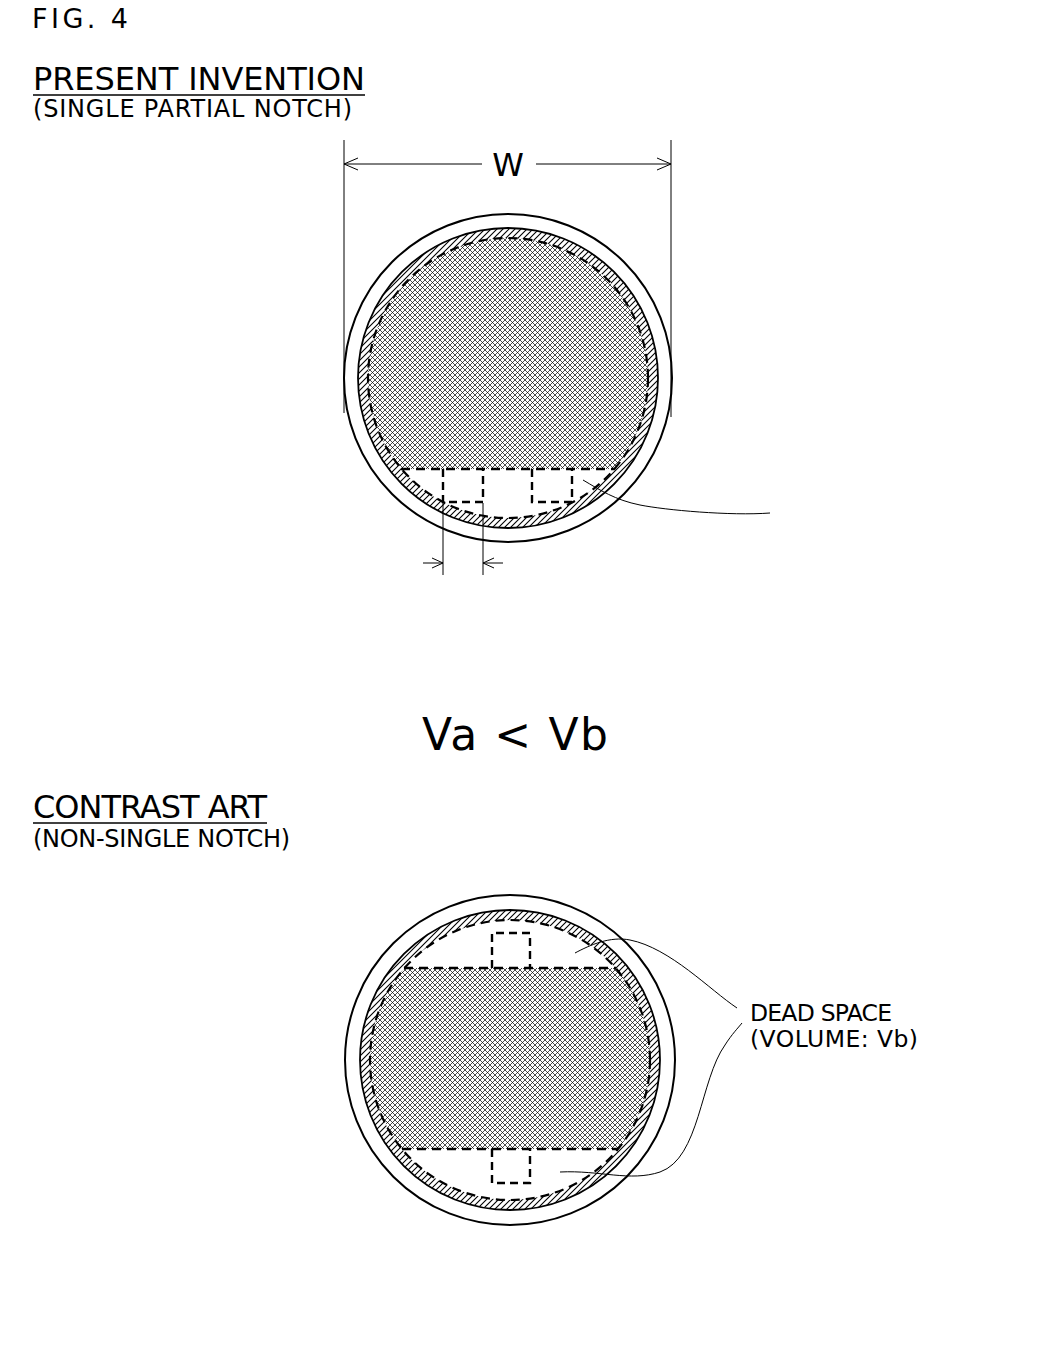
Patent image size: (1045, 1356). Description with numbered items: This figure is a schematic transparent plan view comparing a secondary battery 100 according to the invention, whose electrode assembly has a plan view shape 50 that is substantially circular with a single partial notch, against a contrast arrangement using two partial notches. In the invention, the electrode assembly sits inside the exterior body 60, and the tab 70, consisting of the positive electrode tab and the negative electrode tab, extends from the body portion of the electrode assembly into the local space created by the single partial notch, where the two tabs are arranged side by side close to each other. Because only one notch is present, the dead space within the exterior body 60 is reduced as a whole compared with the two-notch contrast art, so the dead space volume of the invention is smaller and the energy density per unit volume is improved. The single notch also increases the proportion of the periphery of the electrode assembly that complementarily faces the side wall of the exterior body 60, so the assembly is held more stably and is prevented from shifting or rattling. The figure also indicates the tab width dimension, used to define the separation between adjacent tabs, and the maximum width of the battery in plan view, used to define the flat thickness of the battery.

The secondary battery 100 is at (646, 347).
The plan view shape having a circular notch 50 is at (528, 375).
The exterior body 60 is at (640, 452).
The tab 70 is at (468, 487).